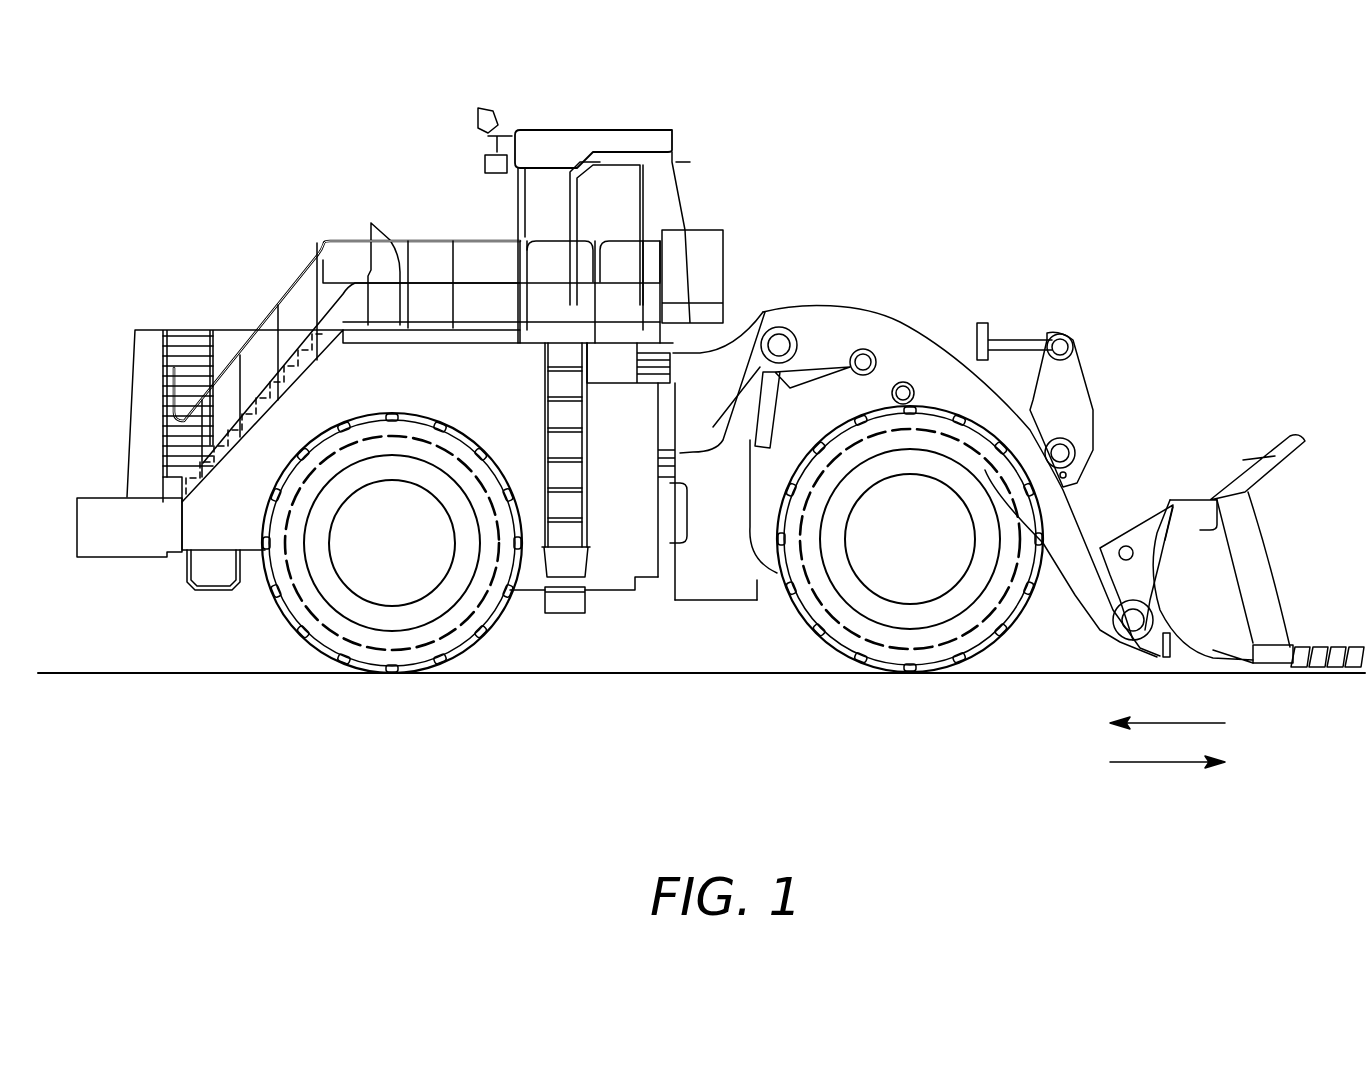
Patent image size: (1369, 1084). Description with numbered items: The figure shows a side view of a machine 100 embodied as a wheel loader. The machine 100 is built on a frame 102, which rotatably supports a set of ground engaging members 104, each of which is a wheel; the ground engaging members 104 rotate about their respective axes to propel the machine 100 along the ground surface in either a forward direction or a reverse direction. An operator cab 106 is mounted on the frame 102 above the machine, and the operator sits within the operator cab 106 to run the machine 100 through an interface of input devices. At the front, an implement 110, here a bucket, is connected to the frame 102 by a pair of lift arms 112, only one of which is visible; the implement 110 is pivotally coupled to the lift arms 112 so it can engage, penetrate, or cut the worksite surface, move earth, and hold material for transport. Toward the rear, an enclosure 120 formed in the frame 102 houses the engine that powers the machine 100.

The machine 100 is at (1208, 183).
The frame 102 is at (218, 541).
The ground engaging members 104 is at (379, 637).
The operator cab 106 is at (568, 142).
The implement 110 is at (1212, 577).
The lift arms 112 is at (930, 357).
The enclosure 120 is at (141, 382).